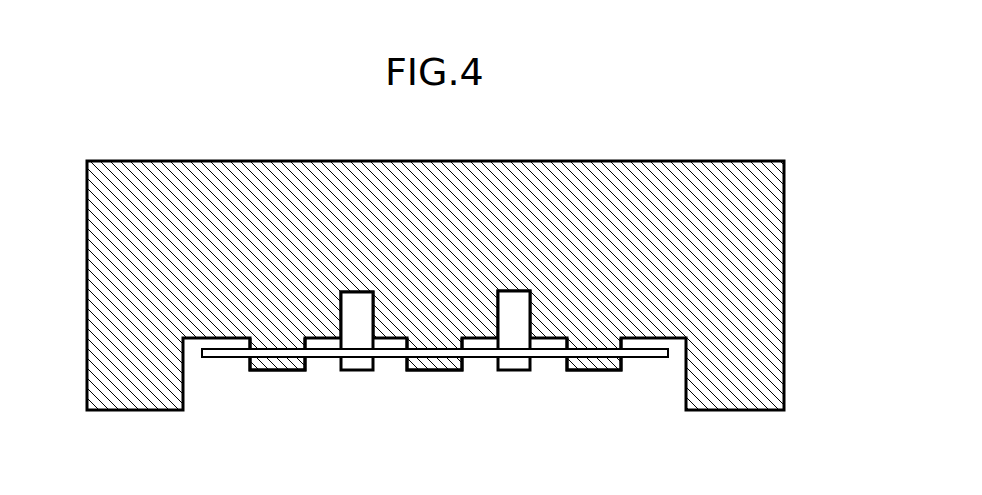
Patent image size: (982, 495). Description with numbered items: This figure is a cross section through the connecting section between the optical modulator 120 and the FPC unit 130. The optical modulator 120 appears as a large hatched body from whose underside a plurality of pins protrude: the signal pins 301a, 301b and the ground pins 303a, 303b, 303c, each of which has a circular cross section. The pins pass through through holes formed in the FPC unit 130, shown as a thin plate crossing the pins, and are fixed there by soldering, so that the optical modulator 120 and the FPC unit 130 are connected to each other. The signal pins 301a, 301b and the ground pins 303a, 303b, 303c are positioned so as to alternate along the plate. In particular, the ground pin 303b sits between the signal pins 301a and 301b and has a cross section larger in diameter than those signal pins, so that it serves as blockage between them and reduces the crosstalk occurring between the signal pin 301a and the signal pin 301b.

The optical modulator 120 is at (719, 161).
The FPC unit 130 is at (643, 357).
The signal pin 301a is at (358, 372).
The signal pin 301b is at (517, 372).
The ground pin 303a is at (280, 372).
The ground pin 303b is at (437, 372).
The ground pin 303c is at (598, 372).